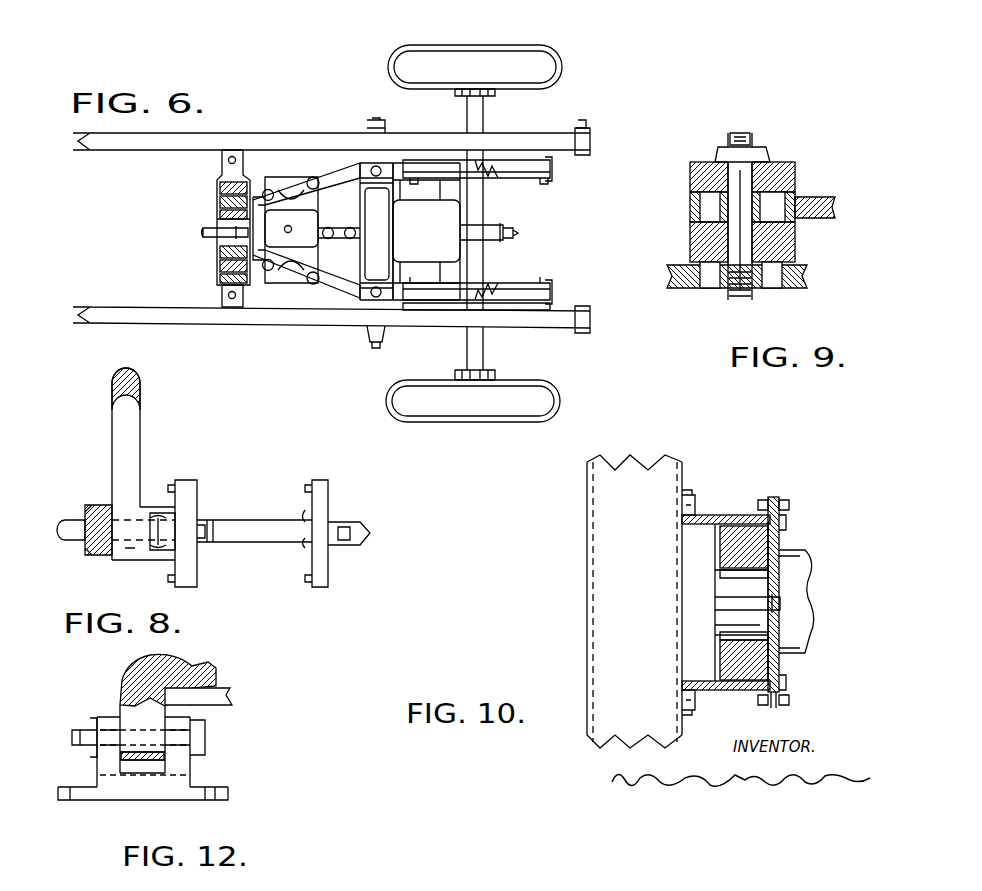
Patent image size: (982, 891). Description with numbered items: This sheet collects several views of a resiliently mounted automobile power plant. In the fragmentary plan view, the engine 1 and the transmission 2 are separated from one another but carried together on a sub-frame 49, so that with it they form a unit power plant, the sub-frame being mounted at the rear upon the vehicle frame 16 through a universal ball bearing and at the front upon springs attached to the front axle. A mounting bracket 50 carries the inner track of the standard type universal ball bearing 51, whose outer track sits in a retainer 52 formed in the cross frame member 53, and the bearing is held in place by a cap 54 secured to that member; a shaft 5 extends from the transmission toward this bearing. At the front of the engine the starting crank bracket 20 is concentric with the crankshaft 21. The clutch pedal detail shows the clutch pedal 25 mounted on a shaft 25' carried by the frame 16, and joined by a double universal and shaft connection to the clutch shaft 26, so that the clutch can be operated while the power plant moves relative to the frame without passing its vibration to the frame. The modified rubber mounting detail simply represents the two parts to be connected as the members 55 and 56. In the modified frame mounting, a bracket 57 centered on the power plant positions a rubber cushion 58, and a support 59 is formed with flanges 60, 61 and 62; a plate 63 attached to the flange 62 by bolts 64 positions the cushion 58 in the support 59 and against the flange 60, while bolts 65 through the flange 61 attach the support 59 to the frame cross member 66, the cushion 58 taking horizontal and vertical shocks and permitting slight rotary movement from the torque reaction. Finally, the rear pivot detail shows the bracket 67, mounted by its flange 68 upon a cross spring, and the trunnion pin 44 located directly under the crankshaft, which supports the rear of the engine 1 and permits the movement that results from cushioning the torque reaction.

In FIG. 6, the engine 1 is at (420, 215).
In FIG. 12, the engine 1 is at (200, 670).
In FIG. 6, the transmission 2 is at (306, 230).
In FIG. 10, the transmission 2 is at (795, 583).
In FIG. 6, the shaft 5 is at (204, 234).
In FIG. 10, the shaft 5 is at (745, 609).
In FIG. 6, the frame 16 is at (86, 150).
In FIG. 6, the starting crank bracket 20 is at (497, 223).
In FIG. 6, the crankshaft 21 is at (518, 236).
In FIG. 8, the clutch pedal 25 is at (154, 477).
In FIG. 8, the shaft 25' is at (71, 516).
In FIG. 8, the clutch shaft 26 is at (345, 522).
In FIG. 12, the trunnion pin 44 is at (72, 738).
In FIG. 6, the sub-frame 49 is at (313, 180).
In FIG. 6, the mounting bracket 50 is at (228, 210).
In FIG. 6, the universal ball bearing 51 is at (225, 198).
In FIG. 6, the retainer 52 is at (222, 183).
In FIG. 6, the cross frame member 53 is at (245, 180).
In FIG. 6, the cap 54 is at (222, 294).
In FIG. 9, the member 55 is at (815, 200).
In FIG. 9, the member 56 is at (800, 282).
In FIG. 10, the bracket 57 is at (720, 566).
In FIG. 10, the rubber cushion 58 is at (762, 548).
In FIG. 10, the support 59 is at (720, 520).
In FIG. 10, the flange 60 is at (720, 533).
In FIG. 10, the flange 61 is at (695, 495).
In FIG. 10, the flange 62 is at (775, 497).
In FIG. 10, the plate 63 is at (778, 525).
In FIG. 10, the bolts 64 is at (782, 500).
In FIG. 10, the bolts 65 is at (693, 512).
In FIG. 10, the frame cross member 66 is at (588, 601).
In FIG. 12, the bracket 67 is at (180, 773).
In FIG. 12, the flange 68 is at (228, 800).